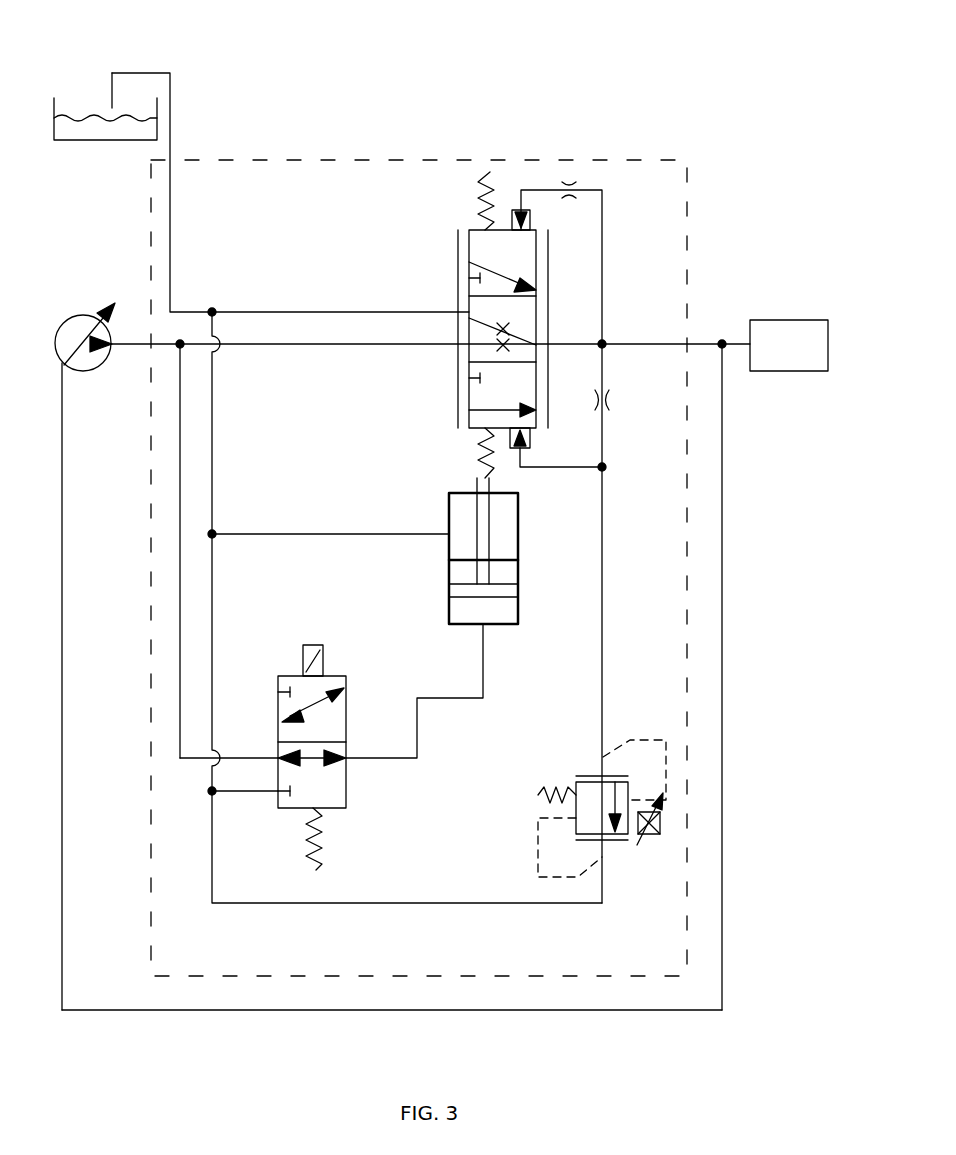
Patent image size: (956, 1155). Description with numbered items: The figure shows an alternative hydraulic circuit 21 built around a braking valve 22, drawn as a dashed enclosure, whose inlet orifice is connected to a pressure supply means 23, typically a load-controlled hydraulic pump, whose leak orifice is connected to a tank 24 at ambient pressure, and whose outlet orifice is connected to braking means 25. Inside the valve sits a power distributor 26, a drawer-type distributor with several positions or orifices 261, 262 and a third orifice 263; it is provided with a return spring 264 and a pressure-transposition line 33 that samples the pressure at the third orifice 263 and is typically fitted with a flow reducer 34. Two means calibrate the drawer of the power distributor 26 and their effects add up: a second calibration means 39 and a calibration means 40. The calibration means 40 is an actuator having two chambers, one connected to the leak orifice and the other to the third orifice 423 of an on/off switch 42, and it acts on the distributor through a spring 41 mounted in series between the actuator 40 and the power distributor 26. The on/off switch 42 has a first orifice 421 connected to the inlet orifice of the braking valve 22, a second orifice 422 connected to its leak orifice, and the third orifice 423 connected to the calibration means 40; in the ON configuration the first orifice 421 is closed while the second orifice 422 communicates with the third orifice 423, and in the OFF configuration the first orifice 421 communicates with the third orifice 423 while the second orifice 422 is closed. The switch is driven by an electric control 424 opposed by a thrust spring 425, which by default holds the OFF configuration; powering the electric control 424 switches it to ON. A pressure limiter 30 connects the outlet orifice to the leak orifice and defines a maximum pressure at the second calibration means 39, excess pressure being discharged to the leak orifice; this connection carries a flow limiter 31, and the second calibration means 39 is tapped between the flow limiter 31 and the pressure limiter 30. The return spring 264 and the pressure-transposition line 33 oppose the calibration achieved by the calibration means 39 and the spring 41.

The hydraulic drive system 21 is at (460, 108).
The braking valve 22 is at (413, 160).
The pressure supply means 23 is at (88, 370).
The tank 24 is at (82, 117).
The braking means 25 is at (797, 320).
The power distributor 26 is at (490, 301).
The first switching position 261 is at (466, 312).
The second switching position 262 is at (458, 345).
The third orifice 263 is at (540, 345).
The return spring 264 is at (500, 170).
The pressure limiter 30 is at (576, 808).
The flow limiter 31 is at (612, 403).
The pressure-transposition line 33 is at (615, 170).
The flow reducer 34 is at (575, 170).
The second calibration means 39 is at (528, 445).
The calibration means 40 is at (518, 590).
The spring 41 is at (475, 466).
The on/off switch 42 is at (306, 765).
The first orifice 421 is at (278, 758).
The second orifice 422 is at (278, 791).
The third orifice 423 is at (346, 758).
The electric control 424 is at (303, 653).
The thrust spring 425 is at (318, 870).